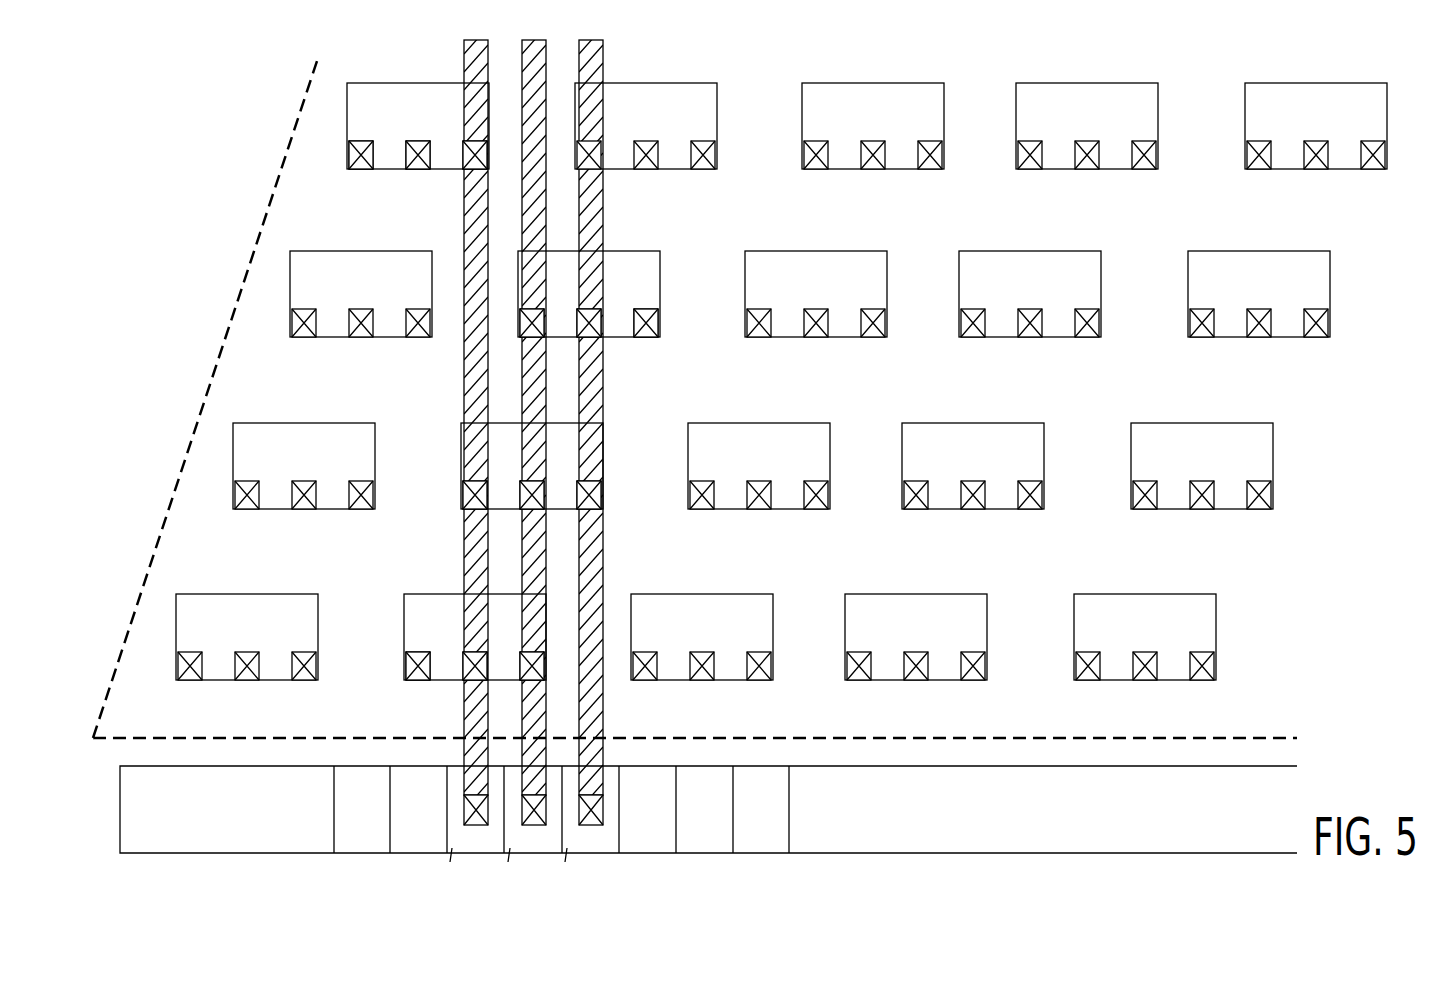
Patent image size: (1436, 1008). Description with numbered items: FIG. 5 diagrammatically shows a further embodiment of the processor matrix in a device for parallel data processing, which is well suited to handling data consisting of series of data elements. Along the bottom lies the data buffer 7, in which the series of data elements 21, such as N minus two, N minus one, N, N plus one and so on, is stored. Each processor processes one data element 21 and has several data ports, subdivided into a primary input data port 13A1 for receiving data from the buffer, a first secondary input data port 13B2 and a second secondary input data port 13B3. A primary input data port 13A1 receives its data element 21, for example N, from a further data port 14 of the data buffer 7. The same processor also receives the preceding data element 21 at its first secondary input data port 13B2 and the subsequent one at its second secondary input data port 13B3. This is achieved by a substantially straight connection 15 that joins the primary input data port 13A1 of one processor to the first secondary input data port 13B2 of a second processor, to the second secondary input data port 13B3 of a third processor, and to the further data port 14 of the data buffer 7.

The data buffer 7 is at (130, 805).
The primary input data port 13A1 is at (418, 169).
The first secondary input data port 13B2 is at (360, 169).
The second secondary input data port 13B3 is at (466, 153).
The further data port 14 is at (603, 808).
The substantially straight connection 15 is at (535, 185).
The data element 21 is at (509, 868).